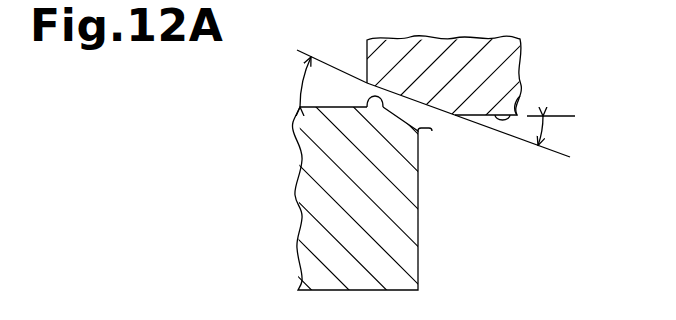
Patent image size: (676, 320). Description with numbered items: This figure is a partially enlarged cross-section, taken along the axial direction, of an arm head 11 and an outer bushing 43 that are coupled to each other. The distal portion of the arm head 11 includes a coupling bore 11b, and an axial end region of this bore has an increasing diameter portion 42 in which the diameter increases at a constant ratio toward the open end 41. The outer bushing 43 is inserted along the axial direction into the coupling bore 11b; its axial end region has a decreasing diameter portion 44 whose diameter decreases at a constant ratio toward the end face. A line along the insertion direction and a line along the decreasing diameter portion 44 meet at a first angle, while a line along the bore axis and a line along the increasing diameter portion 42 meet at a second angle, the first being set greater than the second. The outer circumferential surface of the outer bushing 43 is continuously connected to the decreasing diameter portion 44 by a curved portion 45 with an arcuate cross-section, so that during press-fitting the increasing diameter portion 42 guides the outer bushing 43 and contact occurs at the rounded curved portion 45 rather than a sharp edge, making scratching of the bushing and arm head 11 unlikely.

The arm head 11 is at (517, 62).
The coupling bore 11b is at (520, 97).
The open end 41 is at (360, 79).
The increasing diameter portion 42 is at (428, 114).
The outer bushing 43 is at (408, 218).
The decreasing diameter portion 44 is at (426, 133).
The curved portion 45 is at (366, 100).